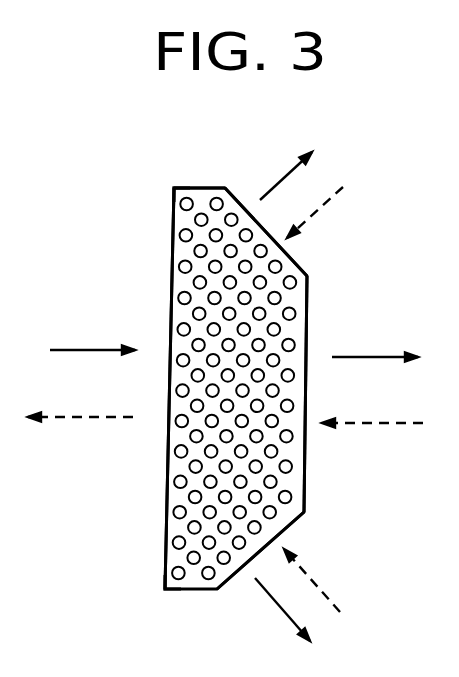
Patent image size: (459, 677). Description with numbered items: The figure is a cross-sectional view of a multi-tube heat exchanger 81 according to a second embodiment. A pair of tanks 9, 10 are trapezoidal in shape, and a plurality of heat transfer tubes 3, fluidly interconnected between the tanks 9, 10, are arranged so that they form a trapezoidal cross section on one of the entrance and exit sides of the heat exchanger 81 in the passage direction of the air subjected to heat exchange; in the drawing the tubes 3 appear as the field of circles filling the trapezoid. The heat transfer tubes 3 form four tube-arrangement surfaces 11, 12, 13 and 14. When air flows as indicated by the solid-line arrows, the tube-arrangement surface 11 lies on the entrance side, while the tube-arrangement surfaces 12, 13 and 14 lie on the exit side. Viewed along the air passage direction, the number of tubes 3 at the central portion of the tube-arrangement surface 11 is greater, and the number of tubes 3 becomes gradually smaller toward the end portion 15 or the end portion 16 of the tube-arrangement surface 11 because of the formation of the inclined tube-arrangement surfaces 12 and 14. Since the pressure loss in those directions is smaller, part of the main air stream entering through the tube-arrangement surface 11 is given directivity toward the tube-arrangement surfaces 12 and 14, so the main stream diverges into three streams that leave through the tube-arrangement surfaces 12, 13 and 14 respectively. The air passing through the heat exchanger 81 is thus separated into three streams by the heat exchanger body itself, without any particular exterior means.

The heat transfer tubes 3 is at (181, 590).
The tank 9 is at (305, 302).
The tank 10 is at (312, 303).
The tube-arrangement surface 11 is at (101, 388).
The tube-arrangement surface 12 is at (249, 204).
The tube-arrangement surface 13 is at (312, 488).
The tube-arrangement surface 14 is at (239, 582).
The end portion 15 is at (175, 188).
The end portion 16 is at (167, 590).
The multi-tube heat exchanger 81 is at (190, 182).